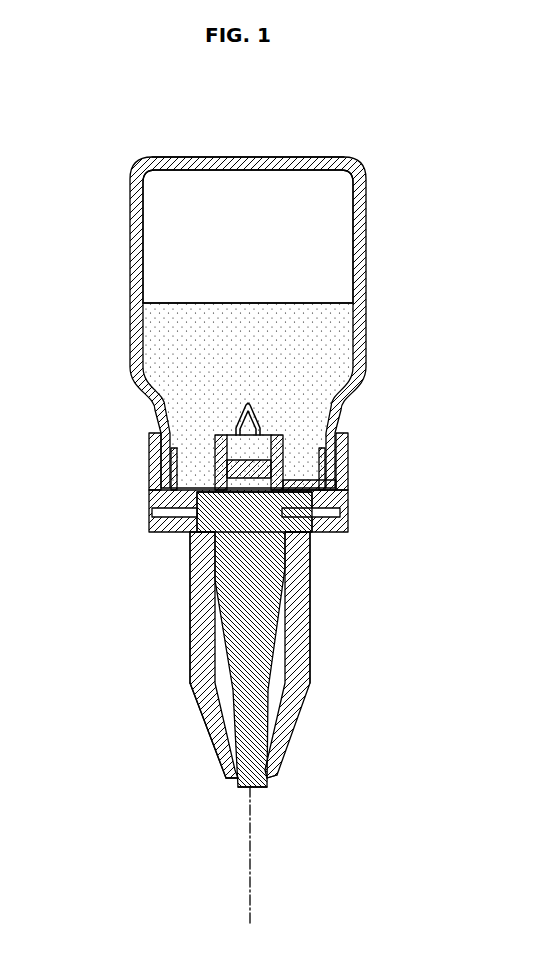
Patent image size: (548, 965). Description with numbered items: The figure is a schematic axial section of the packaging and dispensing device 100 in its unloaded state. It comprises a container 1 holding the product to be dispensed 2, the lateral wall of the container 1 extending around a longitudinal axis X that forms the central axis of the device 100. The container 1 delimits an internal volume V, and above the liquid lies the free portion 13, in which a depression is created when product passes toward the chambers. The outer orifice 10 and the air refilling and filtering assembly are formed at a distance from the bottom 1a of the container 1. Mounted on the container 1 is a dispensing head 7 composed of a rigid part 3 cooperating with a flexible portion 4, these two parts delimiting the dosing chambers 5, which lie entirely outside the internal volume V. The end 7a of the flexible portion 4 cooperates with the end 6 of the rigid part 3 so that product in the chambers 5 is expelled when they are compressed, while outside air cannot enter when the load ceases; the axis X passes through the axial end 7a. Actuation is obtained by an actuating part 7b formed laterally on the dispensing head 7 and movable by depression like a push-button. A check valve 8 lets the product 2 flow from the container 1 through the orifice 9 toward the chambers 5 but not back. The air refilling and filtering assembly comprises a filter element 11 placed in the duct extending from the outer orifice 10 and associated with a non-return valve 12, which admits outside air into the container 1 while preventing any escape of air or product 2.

The container 1 is at (365, 248).
The bottom of the container 1a is at (235, 158).
The free portion 13 is at (220, 193).
The internal volume V is at (173, 253).
The product to be dispensed 2 is at (237, 340).
The check valve 12 is at (240, 410).
The orifice 9 is at (175, 477).
The outer orifice 10 is at (350, 488).
The filter element 11 is at (283, 448).
The dispensing head 7 is at (318, 553).
The check valve 8 is at (172, 520).
The rigid part 3 is at (215, 582).
The actuating part 7b is at (190, 603).
The flexible portion 4 is at (305, 637).
The dosing chambers 5 is at (192, 684).
The axial end 7a is at (222, 768).
The end of the rigid part 6 is at (262, 768).
The packaging and dispensing device 100 is at (153, 820).
The longitudinal axis X is at (248, 843).